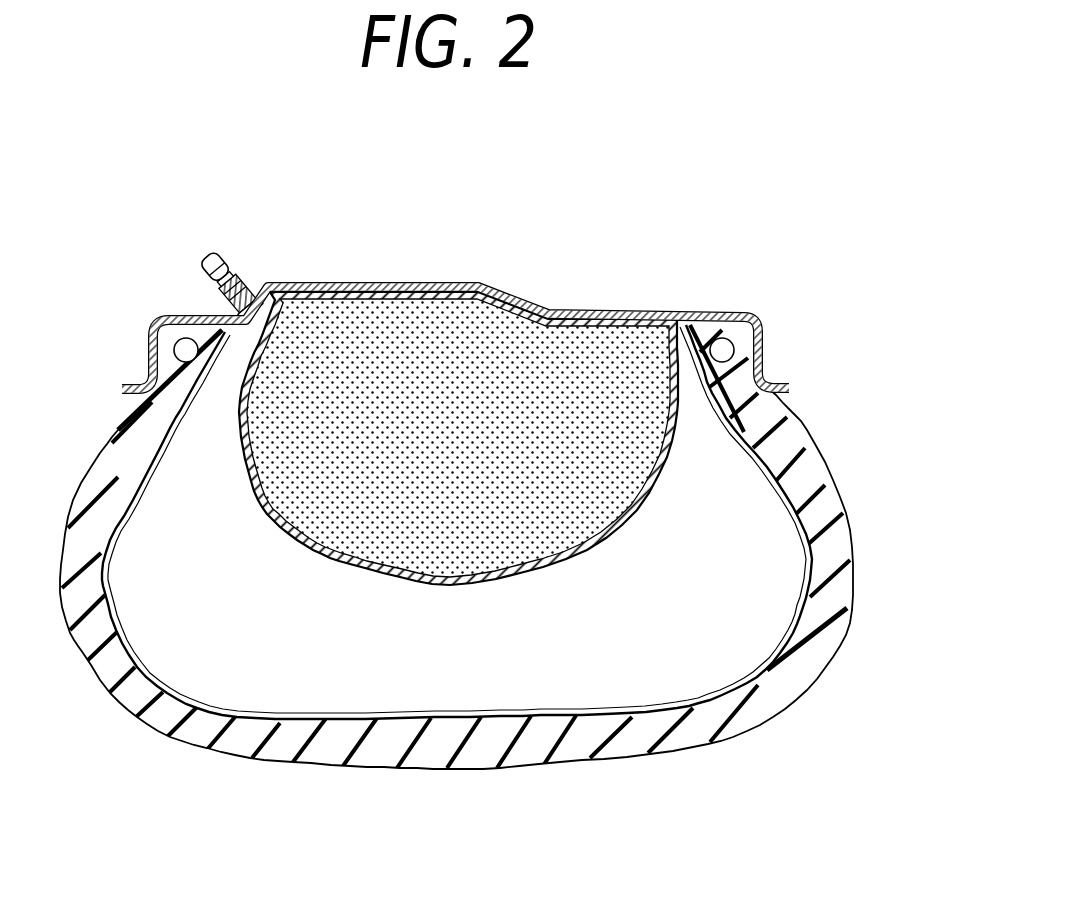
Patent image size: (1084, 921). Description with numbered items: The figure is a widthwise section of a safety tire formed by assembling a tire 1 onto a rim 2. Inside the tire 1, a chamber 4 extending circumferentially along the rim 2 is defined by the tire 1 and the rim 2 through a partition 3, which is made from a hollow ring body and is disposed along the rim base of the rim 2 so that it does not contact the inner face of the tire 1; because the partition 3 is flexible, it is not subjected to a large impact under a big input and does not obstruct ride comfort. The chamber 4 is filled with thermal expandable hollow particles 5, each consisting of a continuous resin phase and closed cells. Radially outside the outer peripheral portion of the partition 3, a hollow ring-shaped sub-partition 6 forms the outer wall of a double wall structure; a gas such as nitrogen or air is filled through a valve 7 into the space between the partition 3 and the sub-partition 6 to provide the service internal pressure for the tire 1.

The tire 1 is at (828, 460).
The rim 2 is at (690, 316).
The partition 3 is at (470, 480).
The chamber 4 is at (312, 544).
The thermal expandable hollow particles 5 is at (482, 507).
The sub-partition 6 is at (808, 606).
The valve 7 is at (226, 294).